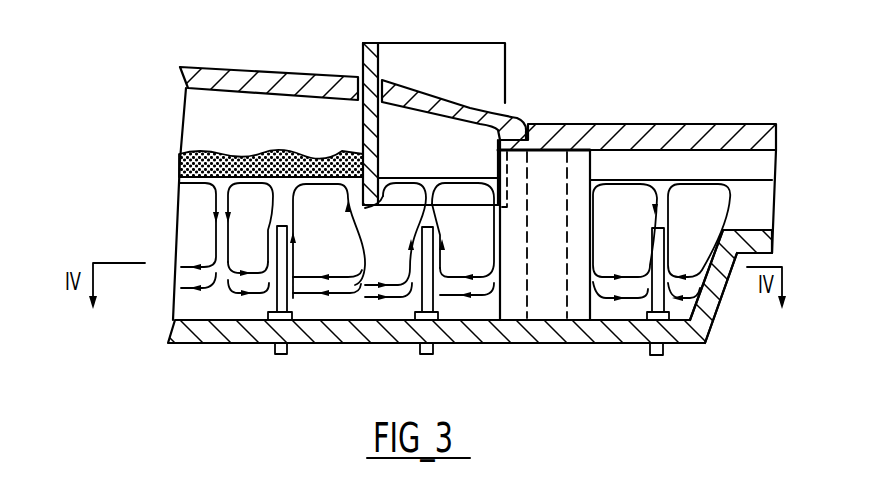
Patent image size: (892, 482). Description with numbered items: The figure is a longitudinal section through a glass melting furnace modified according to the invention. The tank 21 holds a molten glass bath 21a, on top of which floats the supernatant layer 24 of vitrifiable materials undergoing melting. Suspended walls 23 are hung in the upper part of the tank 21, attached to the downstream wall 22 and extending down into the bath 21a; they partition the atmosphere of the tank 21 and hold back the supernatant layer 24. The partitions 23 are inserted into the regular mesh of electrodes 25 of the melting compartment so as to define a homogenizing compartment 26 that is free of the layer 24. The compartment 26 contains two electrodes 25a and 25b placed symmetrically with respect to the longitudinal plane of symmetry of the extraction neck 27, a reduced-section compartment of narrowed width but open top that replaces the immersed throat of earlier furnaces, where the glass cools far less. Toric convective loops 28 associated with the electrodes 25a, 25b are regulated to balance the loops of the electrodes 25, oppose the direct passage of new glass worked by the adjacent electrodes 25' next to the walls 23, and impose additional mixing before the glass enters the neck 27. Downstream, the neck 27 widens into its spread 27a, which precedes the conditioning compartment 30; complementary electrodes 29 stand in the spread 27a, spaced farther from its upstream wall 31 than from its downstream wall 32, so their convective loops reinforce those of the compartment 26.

The tank 21 is at (203, 46).
The molten glass bath 21a is at (190, 210).
The downstream wall 22 is at (497, 165).
The suspended walls 23 is at (363, 68).
The supernatant layer 24 is at (180, 160).
The electrodes 25 is at (376, 287).
The electrode 25a is at (426, 290).
The electrode 25b is at (418, 302).
The adjacent electrodes 25' is at (246, 308).
The homogenizing compartment 26 is at (430, 138).
The extraction neck 27 is at (537, 352).
The spread 27a is at (665, 178).
The toric convective loops 28 is at (472, 290).
The complementary electrodes 29 is at (655, 308).
The conditioning compartment 30 is at (760, 110).
The upstream wall 31 is at (598, 178).
The downstream wall 32 is at (680, 320).